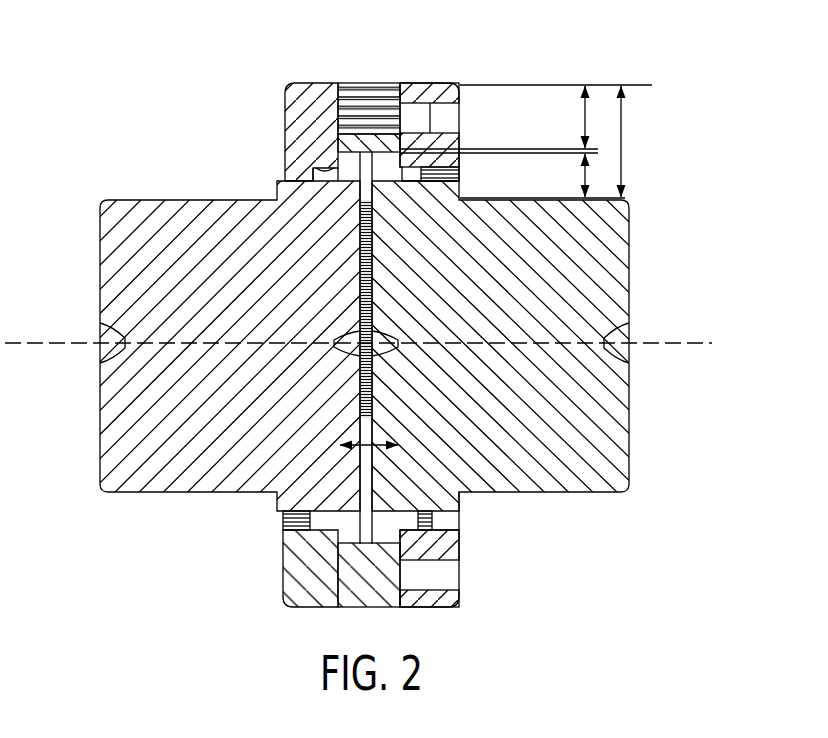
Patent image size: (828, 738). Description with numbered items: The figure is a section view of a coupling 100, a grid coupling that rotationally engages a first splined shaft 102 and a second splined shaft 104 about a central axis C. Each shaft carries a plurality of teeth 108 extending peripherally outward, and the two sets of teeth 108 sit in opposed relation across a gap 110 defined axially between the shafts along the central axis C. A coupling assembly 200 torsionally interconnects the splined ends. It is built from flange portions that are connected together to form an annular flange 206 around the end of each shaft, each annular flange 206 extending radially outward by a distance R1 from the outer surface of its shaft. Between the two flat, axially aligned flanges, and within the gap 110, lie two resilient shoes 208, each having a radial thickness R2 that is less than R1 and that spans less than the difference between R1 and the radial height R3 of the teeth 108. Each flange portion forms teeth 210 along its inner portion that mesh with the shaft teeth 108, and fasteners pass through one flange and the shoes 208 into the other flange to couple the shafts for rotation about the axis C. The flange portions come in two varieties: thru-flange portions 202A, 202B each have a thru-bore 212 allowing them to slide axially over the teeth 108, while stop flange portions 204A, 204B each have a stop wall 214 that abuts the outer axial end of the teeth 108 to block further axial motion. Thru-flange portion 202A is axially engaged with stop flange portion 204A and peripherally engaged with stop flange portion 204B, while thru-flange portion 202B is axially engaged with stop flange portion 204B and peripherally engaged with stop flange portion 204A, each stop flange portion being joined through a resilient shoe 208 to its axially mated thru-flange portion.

The coupling 100 is at (414, 331).
The first splined shaft 102 is at (118, 265).
The second splined shaft 104 is at (615, 270).
The teeth 108 is at (345, 183).
The gap 110 is at (400, 442).
The coupling assembly 200 is at (386, 331).
The thru-flange portion 202A is at (420, 170).
The thru-flange portion 202B is at (295, 572).
The stop flange portion 204A is at (298, 105).
The stop flange portion 204B is at (447, 552).
The annular flange 206 is at (450, 80).
The resilient shoe 208 is at (352, 82).
The teeth 210 is at (316, 164).
The thru-bore 212 is at (274, 523).
The stop wall 214 is at (293, 176).
The radial distance R1 is at (556, 141).
The radial thickness R2 is at (499, 119).
The radial height R3 is at (571, 175).
The central axis C is at (690, 350).